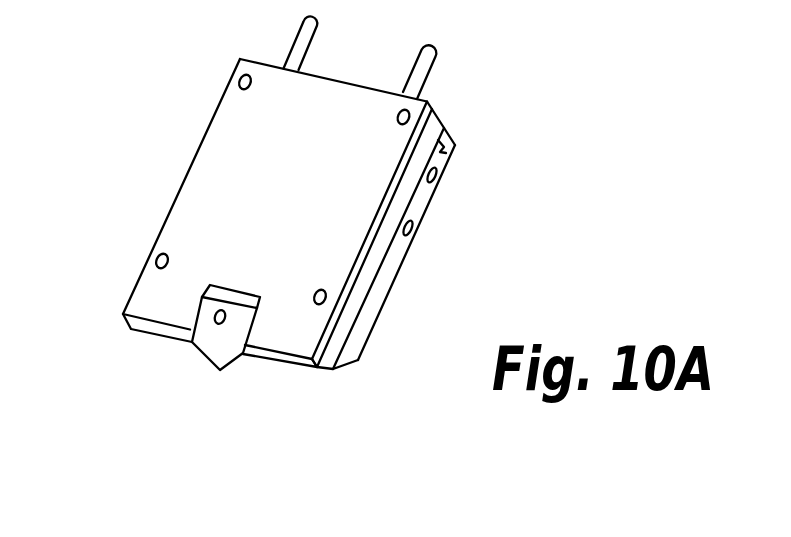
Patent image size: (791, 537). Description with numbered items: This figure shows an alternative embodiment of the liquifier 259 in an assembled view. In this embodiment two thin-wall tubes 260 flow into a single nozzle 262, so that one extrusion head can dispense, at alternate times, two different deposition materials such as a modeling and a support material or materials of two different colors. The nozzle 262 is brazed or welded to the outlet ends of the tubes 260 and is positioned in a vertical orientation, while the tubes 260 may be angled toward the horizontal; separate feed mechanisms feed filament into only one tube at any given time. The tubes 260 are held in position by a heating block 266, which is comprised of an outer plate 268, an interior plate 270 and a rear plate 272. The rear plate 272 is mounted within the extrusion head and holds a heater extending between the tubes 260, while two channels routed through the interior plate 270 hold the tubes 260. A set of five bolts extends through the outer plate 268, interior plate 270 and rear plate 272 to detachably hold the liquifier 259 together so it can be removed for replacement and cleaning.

The liquifier 259 is at (485, 182).
The thin-wall tubes 260 is at (420, 63).
The nozzle 262 is at (220, 345).
The heating block 266 is at (243, 158).
The outer plate 268 is at (190, 223).
The interior plate 270 is at (440, 123).
The rear plate 272 is at (384, 276).